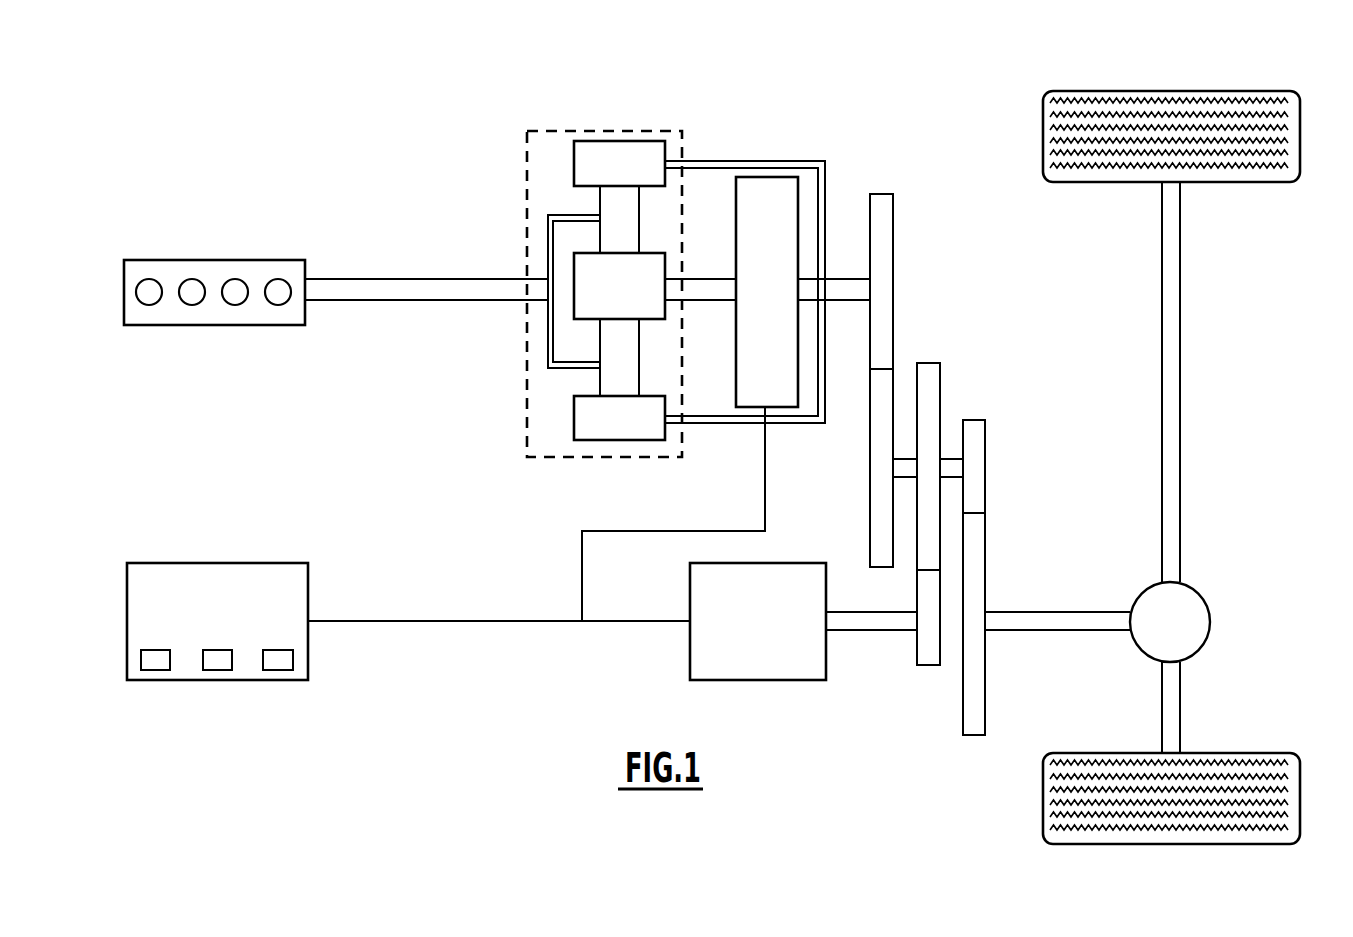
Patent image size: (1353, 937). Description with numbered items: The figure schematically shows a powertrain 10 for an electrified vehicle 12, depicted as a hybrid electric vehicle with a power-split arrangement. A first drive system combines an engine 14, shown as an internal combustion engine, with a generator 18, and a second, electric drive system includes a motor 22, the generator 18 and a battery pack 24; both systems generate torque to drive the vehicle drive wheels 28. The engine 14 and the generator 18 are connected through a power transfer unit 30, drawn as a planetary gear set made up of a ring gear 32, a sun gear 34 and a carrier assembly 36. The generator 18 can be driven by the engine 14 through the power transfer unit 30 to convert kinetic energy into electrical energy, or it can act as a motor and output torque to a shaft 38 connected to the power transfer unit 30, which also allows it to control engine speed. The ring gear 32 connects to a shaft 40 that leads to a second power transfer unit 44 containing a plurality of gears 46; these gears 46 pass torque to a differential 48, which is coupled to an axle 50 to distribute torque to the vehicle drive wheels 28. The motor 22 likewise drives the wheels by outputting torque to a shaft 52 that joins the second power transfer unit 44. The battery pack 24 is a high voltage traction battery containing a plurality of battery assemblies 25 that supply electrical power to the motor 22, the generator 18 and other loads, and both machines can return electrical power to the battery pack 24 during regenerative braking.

The powertrain 10 is at (365, 155).
The electrified vehicle 12 is at (792, 84).
The engine 14 is at (145, 260).
The generator 18 is at (745, 177).
The motor 22 is at (826, 662).
The battery pack 24 is at (145, 563).
The battery assemblies 25 is at (170, 662).
The vehicle drive wheels 28 is at (1300, 798).
The power transfer unit 30 is at (527, 412).
The ring gear 32 is at (574, 163).
The sun gear 34 is at (574, 262).
The carrier assembly 36 is at (548, 350).
The shaft 38 is at (700, 279).
The shaft 40 is at (893, 240).
The second power transfer unit 44 is at (968, 320).
The gears 46 is at (893, 331).
The differential 48 is at (1205, 643).
The axle 50 is at (1182, 370).
The shaft 52 is at (883, 632).